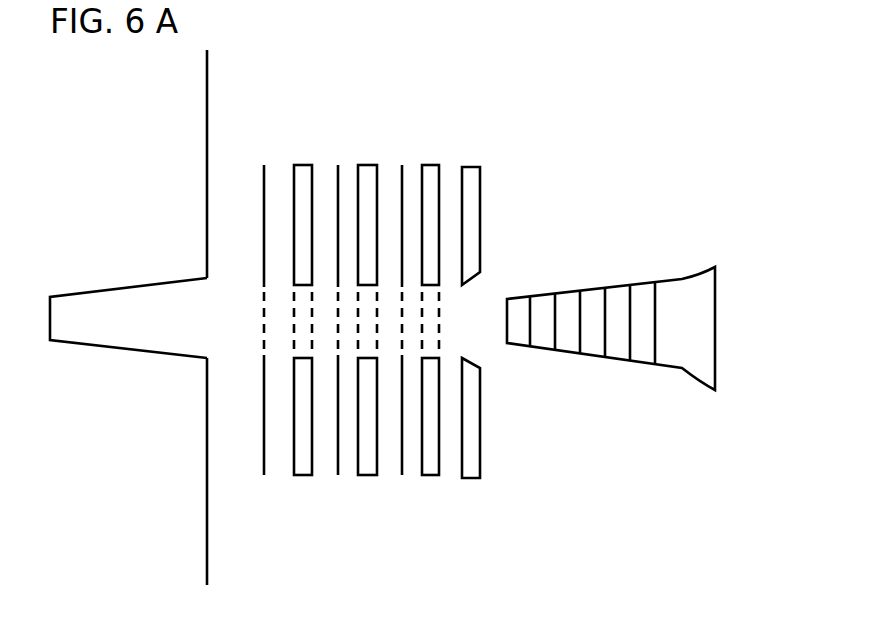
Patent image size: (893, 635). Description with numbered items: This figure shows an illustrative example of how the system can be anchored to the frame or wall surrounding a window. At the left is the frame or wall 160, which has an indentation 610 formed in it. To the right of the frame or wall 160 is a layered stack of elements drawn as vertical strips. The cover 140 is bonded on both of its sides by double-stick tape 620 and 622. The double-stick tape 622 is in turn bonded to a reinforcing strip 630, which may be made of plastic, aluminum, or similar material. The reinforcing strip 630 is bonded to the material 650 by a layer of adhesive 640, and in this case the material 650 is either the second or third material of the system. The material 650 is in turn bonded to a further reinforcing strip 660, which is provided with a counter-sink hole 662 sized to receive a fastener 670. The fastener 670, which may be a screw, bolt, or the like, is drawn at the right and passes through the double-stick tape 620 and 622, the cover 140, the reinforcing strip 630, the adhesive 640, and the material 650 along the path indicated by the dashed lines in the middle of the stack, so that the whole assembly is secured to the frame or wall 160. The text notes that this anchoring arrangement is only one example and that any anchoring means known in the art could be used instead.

The frame or wall 160 is at (207, 166).
The indentation 610 is at (103, 366).
The double-stick tape 620 is at (265, 148).
The cover 140 is at (302, 495).
The double-stick tape 622 is at (339, 148).
The reinforcing strip 630 is at (367, 492).
The adhesive 640 is at (400, 148).
The material 650 is at (432, 508).
The reinforcing strip 660 is at (478, 148).
The counter-sink hole 662 is at (487, 357).
The fastener 670 is at (716, 318).